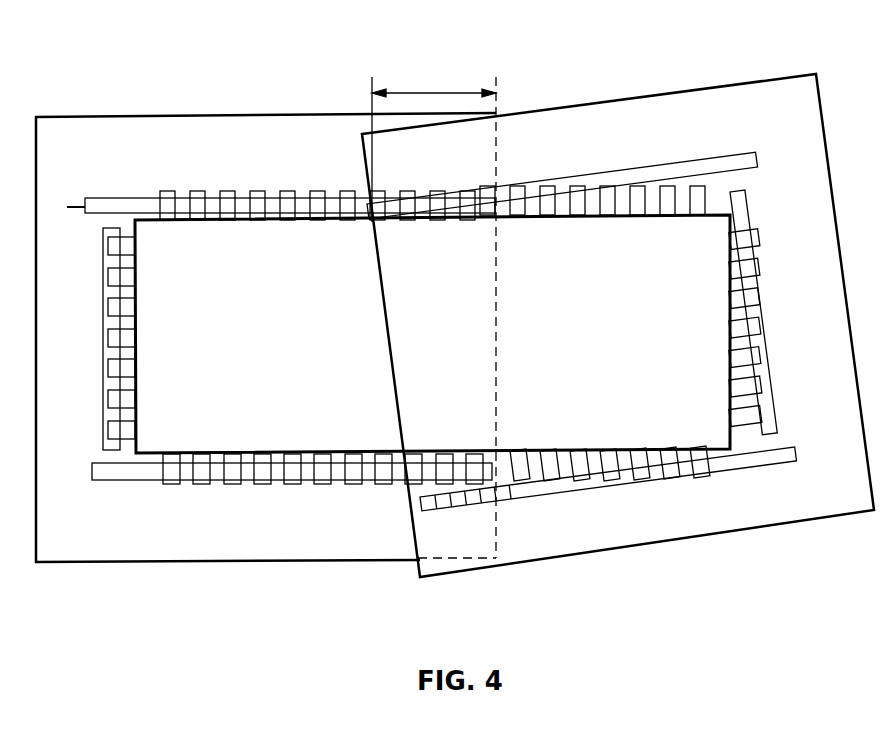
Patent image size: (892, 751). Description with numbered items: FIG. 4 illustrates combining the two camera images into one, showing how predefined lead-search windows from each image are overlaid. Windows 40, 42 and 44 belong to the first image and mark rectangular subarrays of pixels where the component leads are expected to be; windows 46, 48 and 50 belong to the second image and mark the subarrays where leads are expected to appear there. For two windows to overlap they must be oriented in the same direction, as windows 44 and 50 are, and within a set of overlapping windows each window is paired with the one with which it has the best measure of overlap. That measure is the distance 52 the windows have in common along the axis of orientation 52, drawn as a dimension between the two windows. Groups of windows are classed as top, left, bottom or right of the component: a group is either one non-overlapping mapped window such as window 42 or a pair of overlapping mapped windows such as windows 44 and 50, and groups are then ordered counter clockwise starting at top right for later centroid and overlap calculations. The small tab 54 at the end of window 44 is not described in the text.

The window 40 is at (139, 472).
The window 42 is at (104, 230).
The window 44 is at (113, 200).
The window 46 is at (753, 462).
The window 48 is at (748, 214).
The window 50 is at (718, 152).
The distance along the axis of orientation 52 is at (438, 88).
The lead strip end tab 54 is at (80, 207).